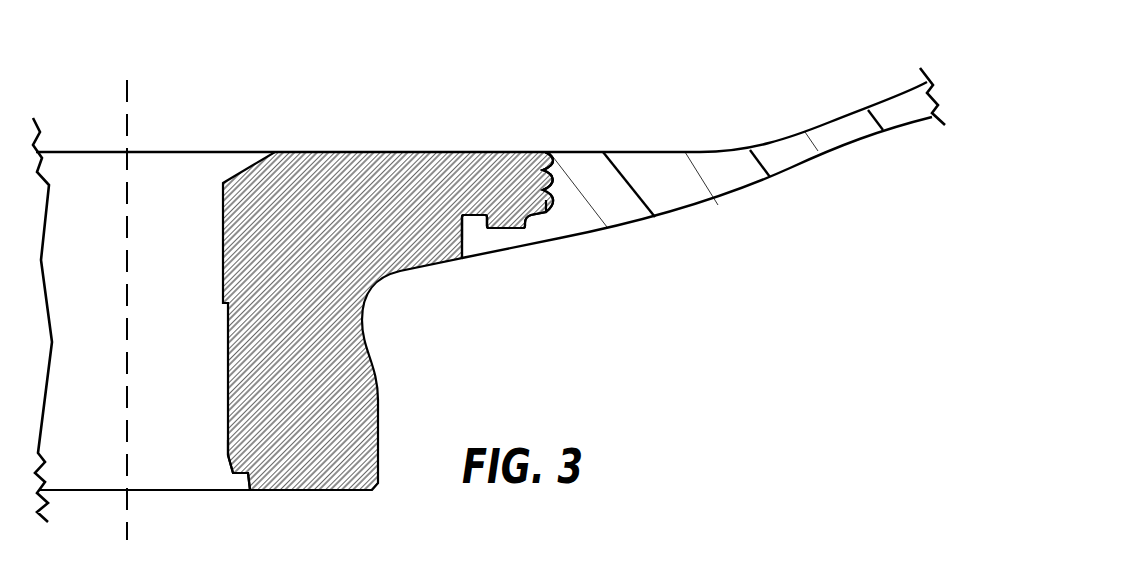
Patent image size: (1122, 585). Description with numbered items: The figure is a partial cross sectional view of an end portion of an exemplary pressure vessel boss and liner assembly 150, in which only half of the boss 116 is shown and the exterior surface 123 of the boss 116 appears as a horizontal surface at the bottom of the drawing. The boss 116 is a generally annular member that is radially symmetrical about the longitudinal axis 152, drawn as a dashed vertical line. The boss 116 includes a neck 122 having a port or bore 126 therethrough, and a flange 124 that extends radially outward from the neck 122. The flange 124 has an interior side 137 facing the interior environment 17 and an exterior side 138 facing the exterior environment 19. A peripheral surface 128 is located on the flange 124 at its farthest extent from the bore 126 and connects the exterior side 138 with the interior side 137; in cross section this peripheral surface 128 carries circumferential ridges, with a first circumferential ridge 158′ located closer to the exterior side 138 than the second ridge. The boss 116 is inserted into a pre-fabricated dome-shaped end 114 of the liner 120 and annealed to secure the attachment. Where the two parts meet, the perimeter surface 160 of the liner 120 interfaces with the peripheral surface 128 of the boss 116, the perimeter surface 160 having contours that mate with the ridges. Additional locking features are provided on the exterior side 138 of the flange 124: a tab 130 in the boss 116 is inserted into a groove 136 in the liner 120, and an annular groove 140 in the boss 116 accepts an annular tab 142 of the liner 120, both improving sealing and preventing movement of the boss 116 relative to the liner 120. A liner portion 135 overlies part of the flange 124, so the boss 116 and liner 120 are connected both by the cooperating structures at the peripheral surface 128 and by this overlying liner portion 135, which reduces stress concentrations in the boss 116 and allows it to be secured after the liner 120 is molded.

The interior environment 17 is at (594, 47).
The exterior environment 19 is at (727, 331).
The dome-shaped end 114 is at (842, 284).
The boss 116 is at (345, 362).
The liner 120 is at (831, 136).
The neck 122 is at (250, 408).
The exterior surface 123 is at (313, 492).
The flange 124 is at (420, 197).
The bore 126 is at (159, 351).
The peripheral surface 128 is at (556, 183).
The tab 130 is at (543, 222).
The liner portion 135 is at (500, 230).
The groove 136 is at (505, 228).
The interior side 137 is at (497, 148).
The exterior side 138 is at (527, 238).
The annular groove 140 is at (477, 217).
The annular tab 142 is at (473, 227).
The assembly 150 is at (700, 30).
The longitudinal axis 152 is at (131, 90).
The first circumferential ridge 158′ is at (550, 198).
The perimeter surface 160 is at (545, 177).